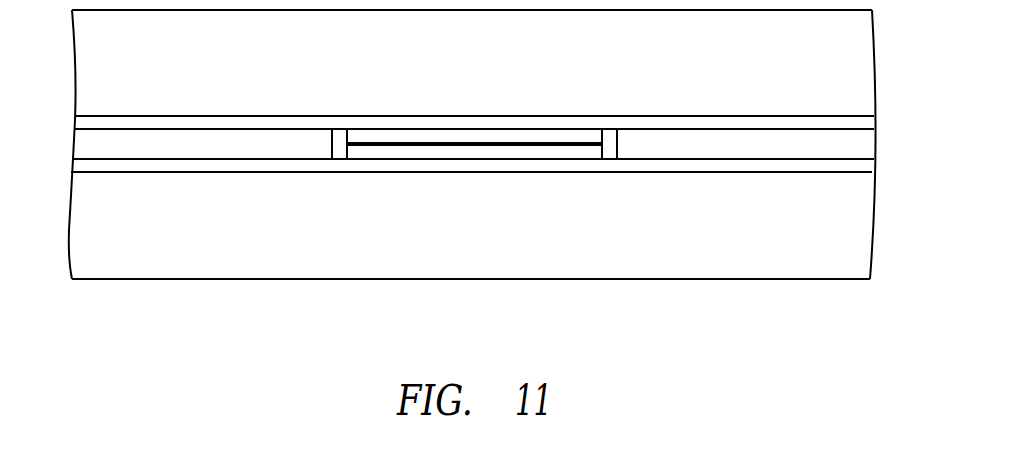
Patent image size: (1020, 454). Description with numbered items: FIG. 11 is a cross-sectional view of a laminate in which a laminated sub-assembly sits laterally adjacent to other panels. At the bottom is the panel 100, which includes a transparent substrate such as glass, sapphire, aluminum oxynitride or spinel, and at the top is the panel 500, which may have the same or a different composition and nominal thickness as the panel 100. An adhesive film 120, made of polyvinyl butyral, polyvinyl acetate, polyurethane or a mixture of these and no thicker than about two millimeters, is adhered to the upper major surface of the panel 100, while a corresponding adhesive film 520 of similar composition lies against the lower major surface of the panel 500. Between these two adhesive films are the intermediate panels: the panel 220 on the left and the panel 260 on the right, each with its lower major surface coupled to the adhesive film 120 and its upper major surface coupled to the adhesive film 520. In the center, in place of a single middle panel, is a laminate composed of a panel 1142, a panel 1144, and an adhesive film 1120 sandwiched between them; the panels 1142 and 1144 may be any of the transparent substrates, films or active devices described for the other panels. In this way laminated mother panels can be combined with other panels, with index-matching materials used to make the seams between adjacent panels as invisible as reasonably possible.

The panel 500 is at (835, 52).
The panel 100 is at (835, 265).
The adhesive film 520 is at (177, 125).
The adhesive film 120 is at (293, 166).
The panel 220 is at (145, 149).
The panel 260 is at (695, 149).
The adhesive film 1120 is at (373, 142).
The panel 1144 is at (503, 136).
The panel 1142 is at (485, 154).